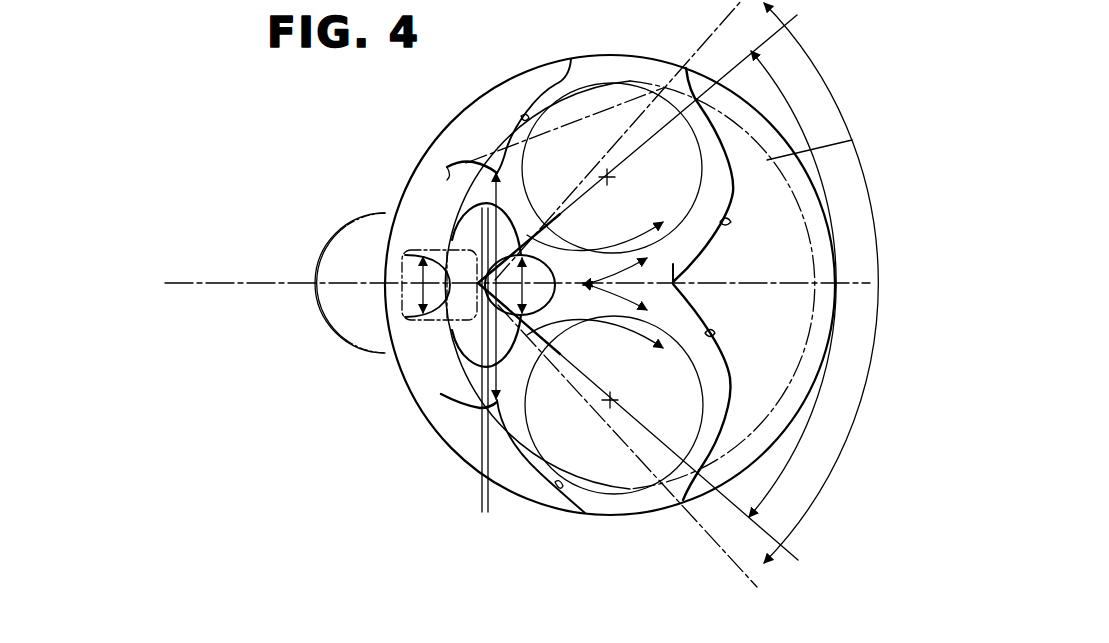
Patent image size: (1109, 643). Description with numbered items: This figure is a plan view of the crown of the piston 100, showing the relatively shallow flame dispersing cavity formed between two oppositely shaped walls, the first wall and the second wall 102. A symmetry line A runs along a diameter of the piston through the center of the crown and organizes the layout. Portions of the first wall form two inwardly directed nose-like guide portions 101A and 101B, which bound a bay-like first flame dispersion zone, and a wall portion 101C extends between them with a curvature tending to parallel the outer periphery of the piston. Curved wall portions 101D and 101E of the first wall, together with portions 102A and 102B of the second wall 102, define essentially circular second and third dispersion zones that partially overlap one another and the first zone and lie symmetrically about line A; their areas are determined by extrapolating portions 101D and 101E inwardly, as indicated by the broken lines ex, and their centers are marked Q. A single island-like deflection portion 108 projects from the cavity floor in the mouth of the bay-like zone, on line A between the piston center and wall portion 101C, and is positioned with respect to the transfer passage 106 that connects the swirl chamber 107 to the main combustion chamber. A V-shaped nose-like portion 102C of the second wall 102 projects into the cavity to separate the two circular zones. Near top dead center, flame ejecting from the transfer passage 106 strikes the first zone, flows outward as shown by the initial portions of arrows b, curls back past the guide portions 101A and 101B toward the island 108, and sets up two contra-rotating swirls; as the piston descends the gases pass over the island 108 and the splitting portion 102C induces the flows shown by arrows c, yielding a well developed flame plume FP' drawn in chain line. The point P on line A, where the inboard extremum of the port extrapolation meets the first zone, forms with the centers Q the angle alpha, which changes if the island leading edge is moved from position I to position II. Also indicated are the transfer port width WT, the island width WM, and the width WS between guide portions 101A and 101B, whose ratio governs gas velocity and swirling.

The piston 100 is at (420, 205).
The nose-like guide portion 101A is at (497, 168).
The nose-like guide portion 101B is at (490, 407).
The wall portion 101C is at (447, 170).
The curved wall portion 101D is at (522, 117).
The curved wall portion 101E is at (560, 497).
The second wall 102 is at (722, 196).
The wall portion of second wall 102A is at (722, 223).
The wall portion of second wall 102B is at (708, 333).
The V-shaped nose-like portion 102C is at (673, 285).
The transfer passage 106 is at (400, 257).
The swirl chamber 107 is at (347, 227).
The island-like deflection portion 108 is at (542, 295).
The symmetry line A is at (233, 281).
The point P is at (440, 233).
The center of circular dispersion zone Q is at (605, 175).
The arrows b is at (492, 218).
The arrows c is at (607, 252).
The broken lines ex is at (538, 203).
The width of transfer port WT is at (413, 302).
The width between guide portions WS is at (495, 402).
The width of island WM is at (534, 290).
The position of island leading edge I is at (488, 495).
The position of island leading edge II is at (482, 503).
The flank profile FP' is at (825, 119).